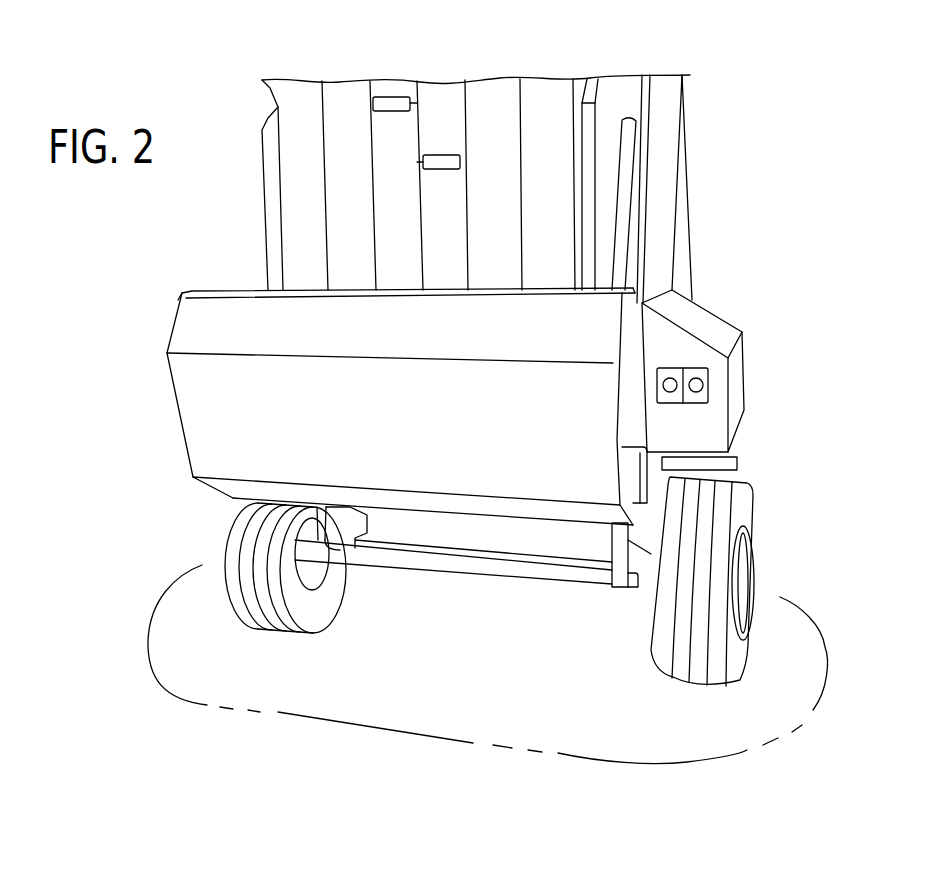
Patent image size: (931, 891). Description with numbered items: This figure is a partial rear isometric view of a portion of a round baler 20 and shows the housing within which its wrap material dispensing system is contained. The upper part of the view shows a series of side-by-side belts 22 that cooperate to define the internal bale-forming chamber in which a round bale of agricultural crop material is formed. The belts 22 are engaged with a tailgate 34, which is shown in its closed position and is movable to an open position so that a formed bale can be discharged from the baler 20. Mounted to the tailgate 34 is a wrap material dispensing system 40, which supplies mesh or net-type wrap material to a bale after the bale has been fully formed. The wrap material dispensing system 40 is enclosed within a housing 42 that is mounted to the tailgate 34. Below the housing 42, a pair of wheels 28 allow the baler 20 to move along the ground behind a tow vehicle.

The round baler 20 is at (730, 152).
The side-by-side belts 22 is at (390, 90).
The tailgate 34 is at (655, 216).
The wrap material dispensing system 40 is at (138, 331).
The housing 42 is at (168, 387).
The wheels 28 is at (221, 525).